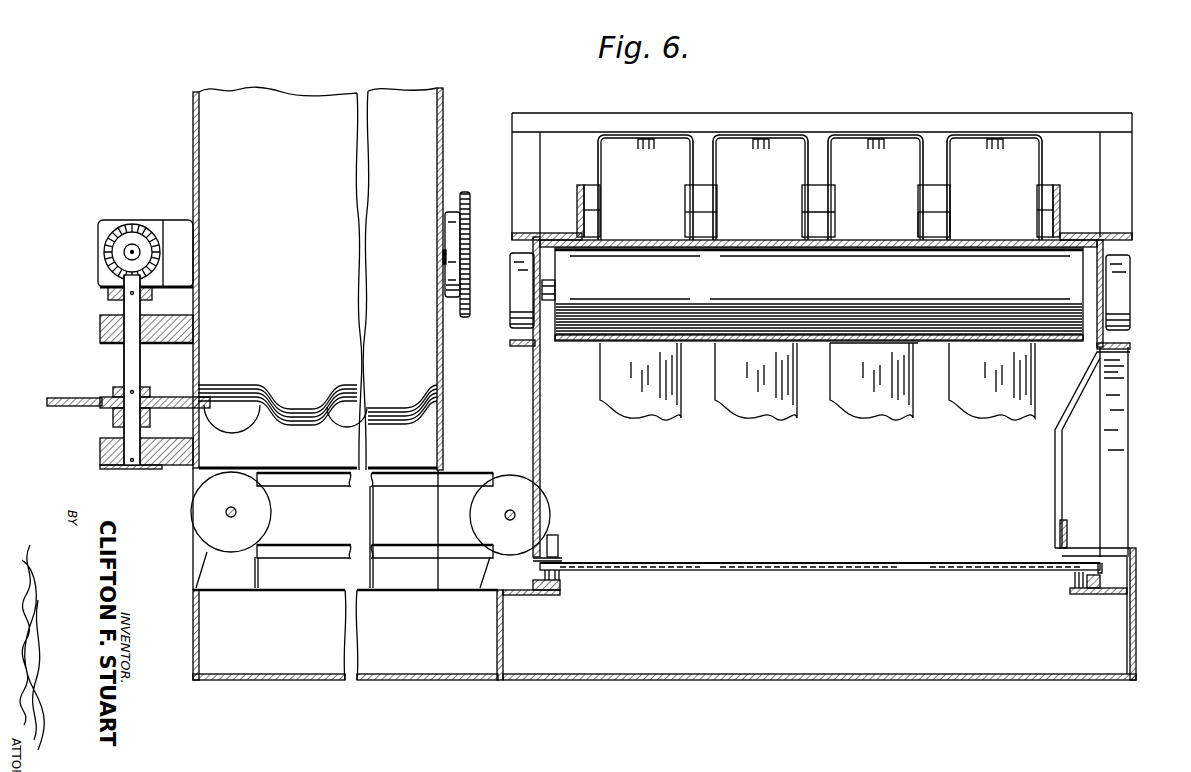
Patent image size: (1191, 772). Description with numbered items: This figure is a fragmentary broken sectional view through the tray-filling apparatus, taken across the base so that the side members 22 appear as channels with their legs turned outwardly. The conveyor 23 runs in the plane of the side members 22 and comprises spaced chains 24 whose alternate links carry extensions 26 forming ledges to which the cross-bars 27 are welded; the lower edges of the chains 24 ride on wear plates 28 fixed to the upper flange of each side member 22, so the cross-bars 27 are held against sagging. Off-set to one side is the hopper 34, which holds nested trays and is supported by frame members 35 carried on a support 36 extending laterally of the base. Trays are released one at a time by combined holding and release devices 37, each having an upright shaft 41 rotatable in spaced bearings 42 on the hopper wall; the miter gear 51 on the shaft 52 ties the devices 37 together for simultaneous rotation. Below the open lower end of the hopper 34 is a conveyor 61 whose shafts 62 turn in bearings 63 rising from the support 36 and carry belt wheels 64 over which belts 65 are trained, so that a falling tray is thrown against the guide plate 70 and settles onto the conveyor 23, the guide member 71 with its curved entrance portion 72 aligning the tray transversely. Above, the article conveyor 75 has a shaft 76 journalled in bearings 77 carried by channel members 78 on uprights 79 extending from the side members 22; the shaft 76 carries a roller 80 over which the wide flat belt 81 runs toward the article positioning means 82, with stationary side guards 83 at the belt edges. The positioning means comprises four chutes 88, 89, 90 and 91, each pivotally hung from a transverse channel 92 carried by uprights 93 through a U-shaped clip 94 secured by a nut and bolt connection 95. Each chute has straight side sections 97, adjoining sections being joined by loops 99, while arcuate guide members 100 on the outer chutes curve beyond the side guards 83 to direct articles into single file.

The side member 22 is at (540, 677).
The conveyor 23 is at (888, 563).
The chain 24 is at (562, 577).
The extension 26 is at (560, 553).
The cross-bar 27 is at (775, 565).
The wear plate 28 is at (563, 592).
The hopper 34 is at (443, 122).
The frame member 35 is at (193, 552).
The support 36 is at (299, 590).
The combined holding and release device 37 is at (53, 389).
The upright shaft 41 is at (130, 362).
The bearing 42 is at (100, 330).
The miter gear 51 is at (118, 232).
The shaft 52 is at (125, 249).
The conveyor 61 is at (335, 568).
The shaft 62 is at (227, 514).
The bearing 63 is at (200, 574).
The belt wheel 64 is at (203, 497).
The belt 65 is at (309, 487).
The guide plate 70 is at (1058, 476).
The guide member 71 is at (558, 557).
The curved entrance portion 72 is at (547, 538).
The conveyor 75 is at (821, 353).
The shaft 76 is at (556, 292).
The bearing 77 is at (520, 305).
The channel member 78 is at (540, 336).
The upright 79 is at (1120, 432).
The roller 80 is at (728, 262).
The belt 81 is at (880, 343).
The article positioning means 82 is at (846, 109).
The side guard 83 is at (585, 218).
The chute 88 is at (993, 407).
The chute 89 is at (885, 403).
The chute 90 is at (762, 407).
The chute 91 is at (652, 405).
The channel 92 is at (735, 113).
The upright 93 is at (512, 155).
The U-shaped clip 94 is at (600, 163).
The nut and bolt connection 95 is at (645, 148).
The side section 97 is at (920, 218).
The loop 99 is at (703, 197).
The arcuate guide member 100 is at (588, 188).